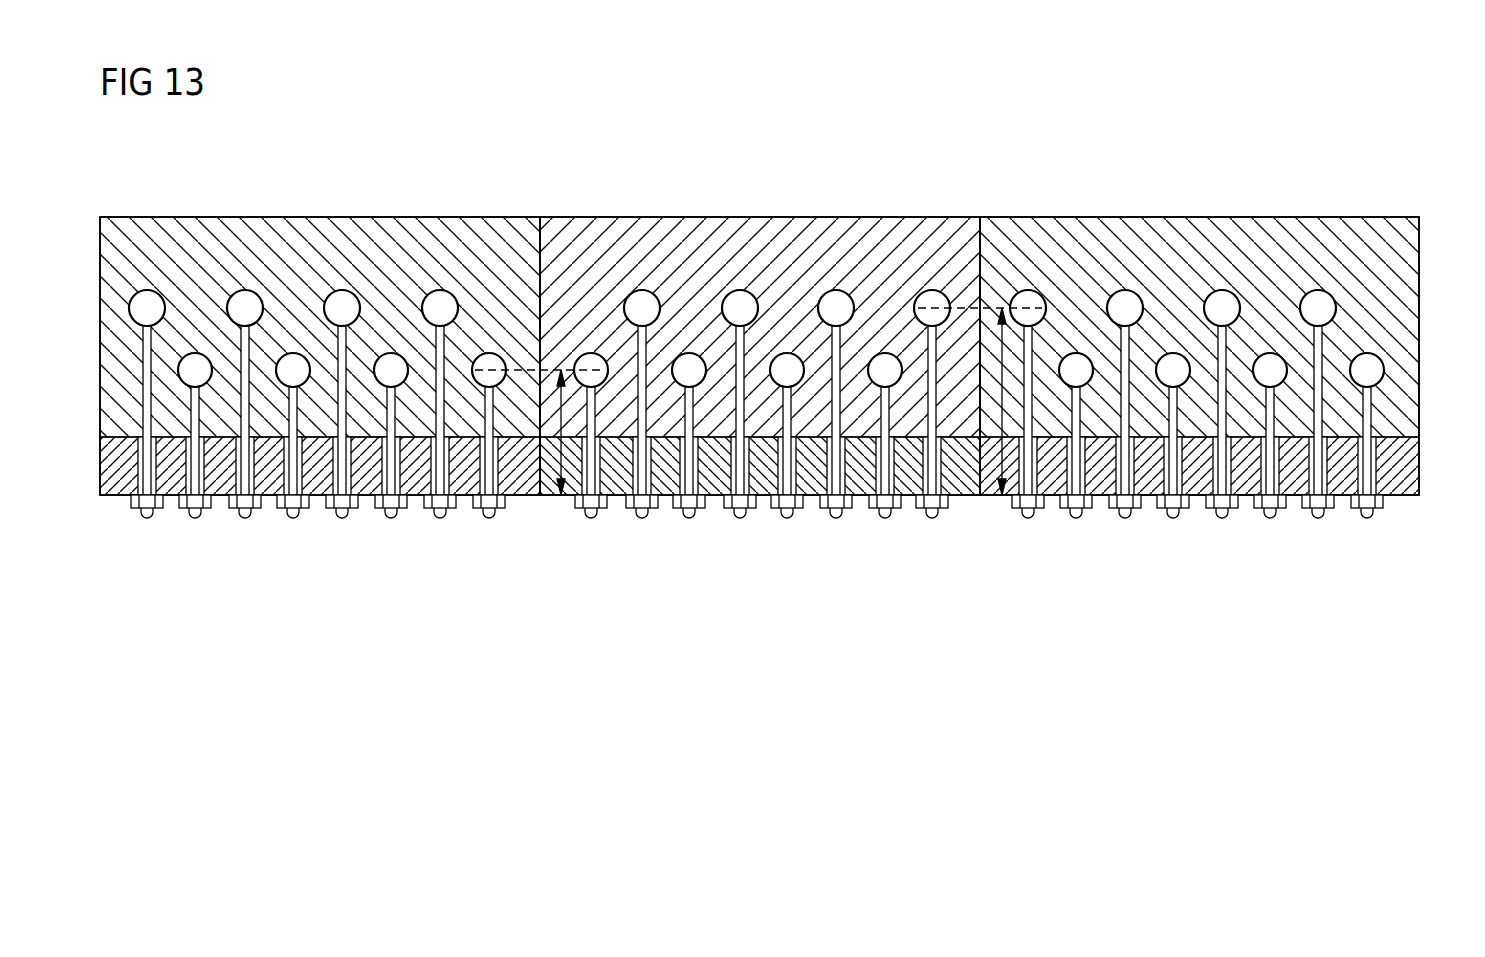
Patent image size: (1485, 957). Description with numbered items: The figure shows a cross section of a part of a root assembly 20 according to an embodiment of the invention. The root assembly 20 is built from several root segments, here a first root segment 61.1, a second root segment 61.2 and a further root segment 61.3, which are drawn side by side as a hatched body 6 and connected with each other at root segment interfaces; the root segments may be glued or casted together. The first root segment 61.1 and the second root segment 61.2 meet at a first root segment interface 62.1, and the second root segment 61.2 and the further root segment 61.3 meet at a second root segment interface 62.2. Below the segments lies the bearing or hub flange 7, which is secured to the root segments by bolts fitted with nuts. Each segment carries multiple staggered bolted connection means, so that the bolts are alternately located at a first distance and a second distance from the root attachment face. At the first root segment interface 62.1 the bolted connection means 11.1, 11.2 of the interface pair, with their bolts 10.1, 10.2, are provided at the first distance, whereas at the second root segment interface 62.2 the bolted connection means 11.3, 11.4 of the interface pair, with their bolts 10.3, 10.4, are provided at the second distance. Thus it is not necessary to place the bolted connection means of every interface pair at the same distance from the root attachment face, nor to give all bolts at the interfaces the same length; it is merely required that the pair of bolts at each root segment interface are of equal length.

The root assembly 20 is at (783, 326).
The block 6 is at (783, 301).
The first root segment 61.1 is at (262, 230).
The second root segment 61.2 is at (776, 232).
The block segment 61.3 is at (1206, 232).
The first root segment interface 62.1 is at (540, 240).
The second root segment interface 62.2 is at (980, 240).
The bearing or hub flange 7 is at (1405, 461).
The bolt 10.1 is at (484, 405).
The bolt 10.2 is at (593, 415).
The bolt 10.3 is at (926, 405).
The bolt 10.4 is at (1033, 415).
The bolted connection means 11.1 is at (489, 362).
The bolted connection means 11.2 is at (592, 362).
The bolted connection means 11.3 is at (932, 300).
The bolted connection means 11.4 is at (1030, 300).